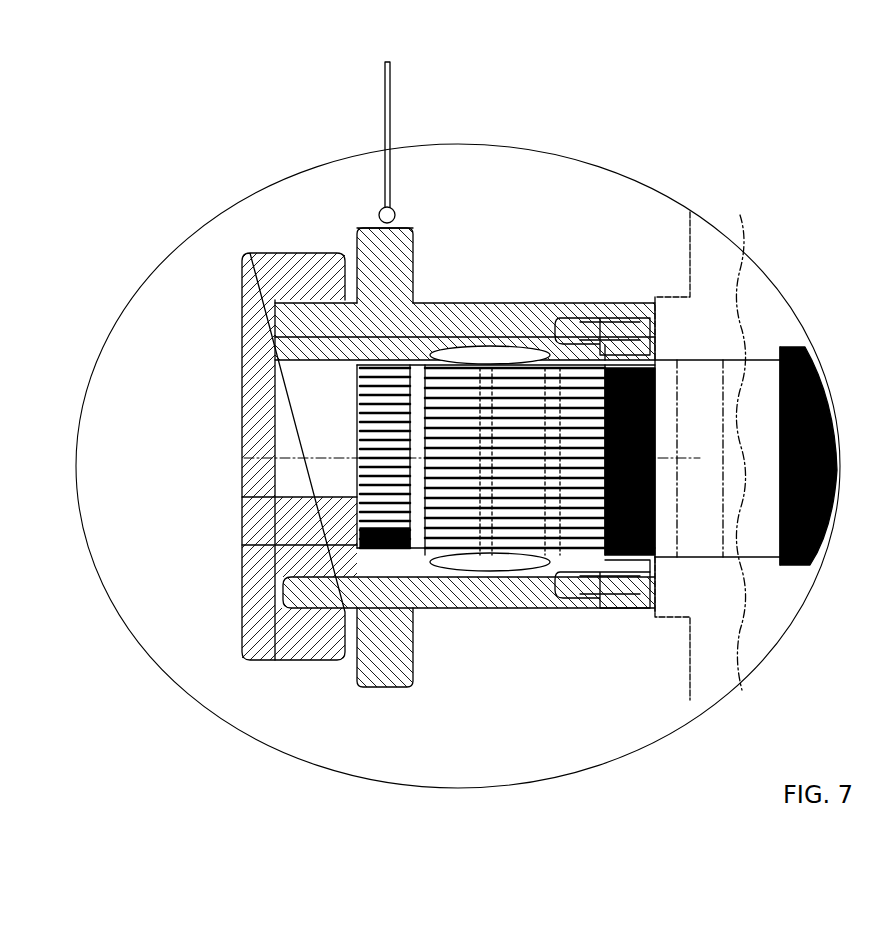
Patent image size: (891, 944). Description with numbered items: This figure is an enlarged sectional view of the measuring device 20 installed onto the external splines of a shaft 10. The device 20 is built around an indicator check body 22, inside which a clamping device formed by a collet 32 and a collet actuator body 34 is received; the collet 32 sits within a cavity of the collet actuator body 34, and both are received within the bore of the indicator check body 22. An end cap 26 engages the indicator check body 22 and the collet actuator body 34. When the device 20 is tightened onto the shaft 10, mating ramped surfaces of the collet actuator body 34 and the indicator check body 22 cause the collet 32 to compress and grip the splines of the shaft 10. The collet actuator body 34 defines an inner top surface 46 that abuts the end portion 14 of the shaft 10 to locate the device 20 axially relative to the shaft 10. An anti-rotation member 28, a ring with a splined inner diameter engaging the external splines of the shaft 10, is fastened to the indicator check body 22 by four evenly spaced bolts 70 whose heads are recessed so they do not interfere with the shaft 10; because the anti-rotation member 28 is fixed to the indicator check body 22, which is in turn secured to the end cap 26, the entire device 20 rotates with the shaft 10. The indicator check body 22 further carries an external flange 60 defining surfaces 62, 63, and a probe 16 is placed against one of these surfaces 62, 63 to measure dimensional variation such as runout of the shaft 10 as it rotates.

The shaft 10 is at (750, 373).
The end portion 14 is at (400, 537).
The probe 16 is at (385, 135).
The device 20 is at (212, 255).
The indicator check body 22 is at (497, 318).
The end cap 26 is at (260, 640).
The anti-rotation member 28 is at (625, 600).
The collet 32 is at (520, 572).
The collet actuator body 34 is at (290, 563).
The inner top surface 46 is at (375, 556).
The external flange 60 is at (385, 683).
The surface 62 is at (402, 225).
The surface 63 is at (413, 252).
The bolts 70 is at (617, 598).